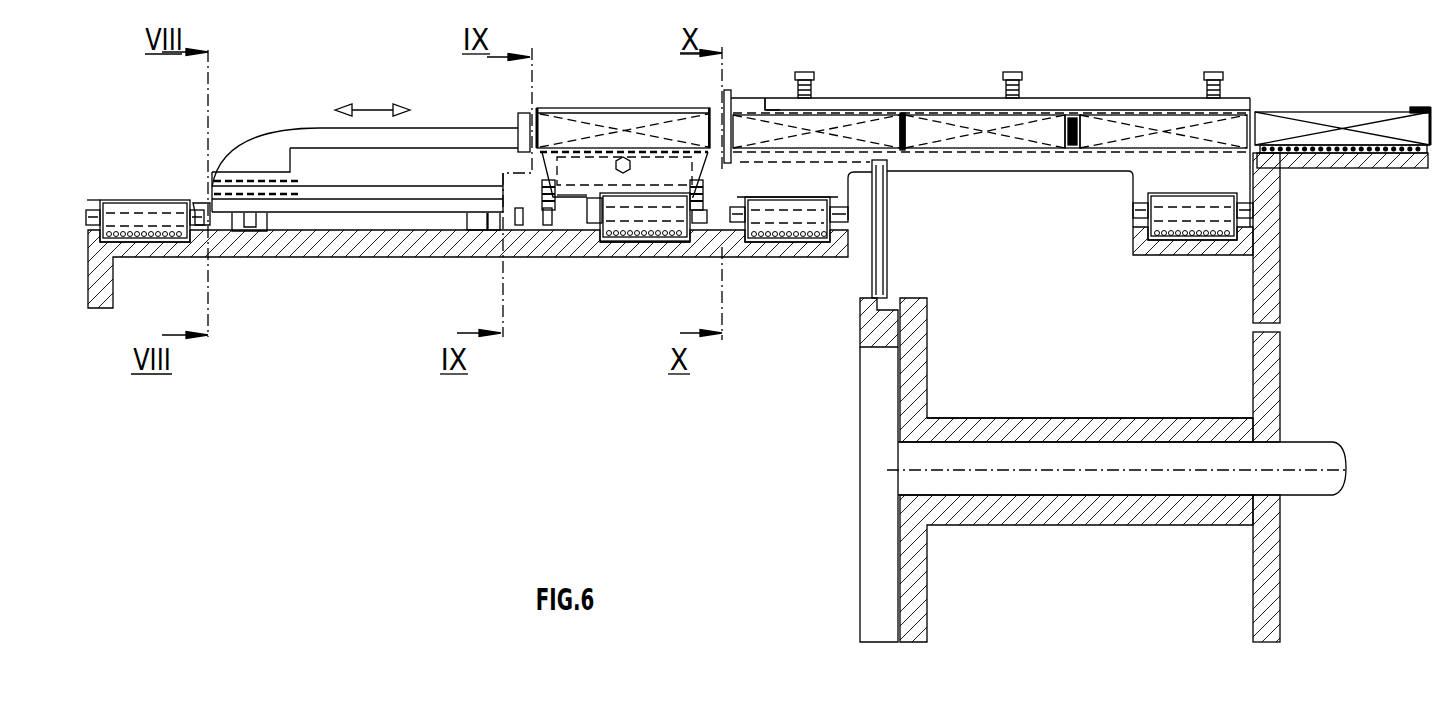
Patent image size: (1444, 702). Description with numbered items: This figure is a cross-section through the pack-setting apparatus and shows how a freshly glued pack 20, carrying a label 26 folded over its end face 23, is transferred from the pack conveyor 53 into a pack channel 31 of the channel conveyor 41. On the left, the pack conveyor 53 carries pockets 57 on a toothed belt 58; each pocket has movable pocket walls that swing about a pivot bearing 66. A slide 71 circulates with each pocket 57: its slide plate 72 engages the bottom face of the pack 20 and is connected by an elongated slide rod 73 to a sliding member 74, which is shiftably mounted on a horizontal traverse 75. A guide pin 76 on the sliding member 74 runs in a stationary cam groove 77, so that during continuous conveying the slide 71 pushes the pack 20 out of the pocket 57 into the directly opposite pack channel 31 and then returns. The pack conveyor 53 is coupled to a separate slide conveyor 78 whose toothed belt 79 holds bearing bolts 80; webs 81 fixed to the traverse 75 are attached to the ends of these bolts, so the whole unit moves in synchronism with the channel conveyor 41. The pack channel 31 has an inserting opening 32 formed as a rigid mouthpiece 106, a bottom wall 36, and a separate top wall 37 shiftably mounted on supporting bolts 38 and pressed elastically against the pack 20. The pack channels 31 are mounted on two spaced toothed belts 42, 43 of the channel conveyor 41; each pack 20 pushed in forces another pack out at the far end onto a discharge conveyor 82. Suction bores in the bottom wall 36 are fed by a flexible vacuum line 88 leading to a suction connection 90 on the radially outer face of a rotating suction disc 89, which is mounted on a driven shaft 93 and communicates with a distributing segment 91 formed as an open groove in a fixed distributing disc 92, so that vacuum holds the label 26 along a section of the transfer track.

The pack 20 is at (725, 86).
The end face 23 is at (710, 127).
The label 26 is at (757, 100).
The pack channel 31 is at (1059, 70).
The inserting opening 32 is at (757, 192).
The bottom wall 36 is at (845, 135).
The top wall 37 is at (1118, 103).
The supporting bolt 38 is at (808, 71).
The channel conveyor 41 is at (809, 272).
The toothed belt 42 is at (788, 238).
The toothed belt 43 is at (1190, 232).
The pack conveyor 53 is at (618, 270).
The pocket 57 is at (607, 107).
The toothed belt 58 is at (660, 215).
The pivot bearing 66 is at (542, 188).
The slide 71 is at (394, 80).
The slide plate 72 is at (524, 117).
The slide rod 73 is at (445, 138).
The sliding member 74 is at (252, 178).
The traverse 75 is at (332, 192).
The guide pin 76 is at (262, 227).
The cam groove 77 is at (275, 218).
The slide conveyor 78 is at (187, 160).
The toothed belt 79 is at (148, 218).
The bearing bolt 80 is at (182, 226).
The web 81 is at (87, 205).
The discharge conveyor 82 is at (1363, 154).
The vacuum line 88 is at (887, 226).
The suction disc 89 is at (873, 498).
The suction connection 90 is at (866, 299).
The distributing segment 91 is at (907, 313).
The distributing disc 92 is at (920, 392).
The shaft 93 is at (1020, 478).
The mouthpiece 106 is at (766, 110).